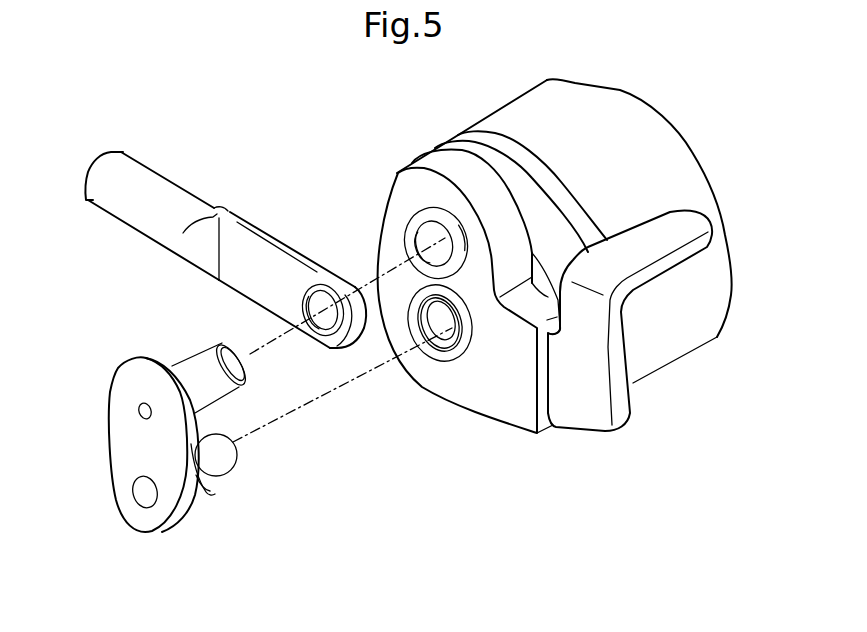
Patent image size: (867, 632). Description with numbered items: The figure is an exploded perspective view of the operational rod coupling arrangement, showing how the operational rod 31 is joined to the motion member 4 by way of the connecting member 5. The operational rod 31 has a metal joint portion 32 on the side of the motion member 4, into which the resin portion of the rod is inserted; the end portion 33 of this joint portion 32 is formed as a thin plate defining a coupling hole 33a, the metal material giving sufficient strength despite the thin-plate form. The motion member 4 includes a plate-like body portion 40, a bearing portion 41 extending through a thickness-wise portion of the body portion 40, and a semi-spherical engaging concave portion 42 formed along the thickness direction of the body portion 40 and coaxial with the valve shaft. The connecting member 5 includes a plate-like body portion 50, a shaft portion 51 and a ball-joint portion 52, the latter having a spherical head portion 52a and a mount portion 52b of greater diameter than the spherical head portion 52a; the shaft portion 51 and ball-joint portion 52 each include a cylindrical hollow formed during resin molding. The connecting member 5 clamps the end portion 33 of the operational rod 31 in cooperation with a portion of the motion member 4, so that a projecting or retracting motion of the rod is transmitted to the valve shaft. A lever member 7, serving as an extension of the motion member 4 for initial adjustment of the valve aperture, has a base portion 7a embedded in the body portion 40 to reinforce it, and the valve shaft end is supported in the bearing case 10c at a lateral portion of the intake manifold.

The motion member 4 is at (548, 287).
The connecting member 5 is at (190, 437).
The lever member 7 is at (653, 227).
The base portion 7a is at (558, 413).
The bearing case 10c is at (677, 353).
The operational rod 31 is at (156, 190).
The joint portion 32 is at (154, 182).
The end portion 33 is at (292, 277).
The coupling hole 33a is at (323, 320).
The body portion 40 is at (478, 392).
The bearing portion 41 is at (423, 234).
The engaging concave portion 42 is at (448, 331).
The body portion 50 is at (123, 443).
The shaft portion 51 is at (197, 357).
The ball-joint portion 52 is at (265, 505).
The spherical head portion 52a is at (237, 457).
The mount portion 52b is at (231, 505).